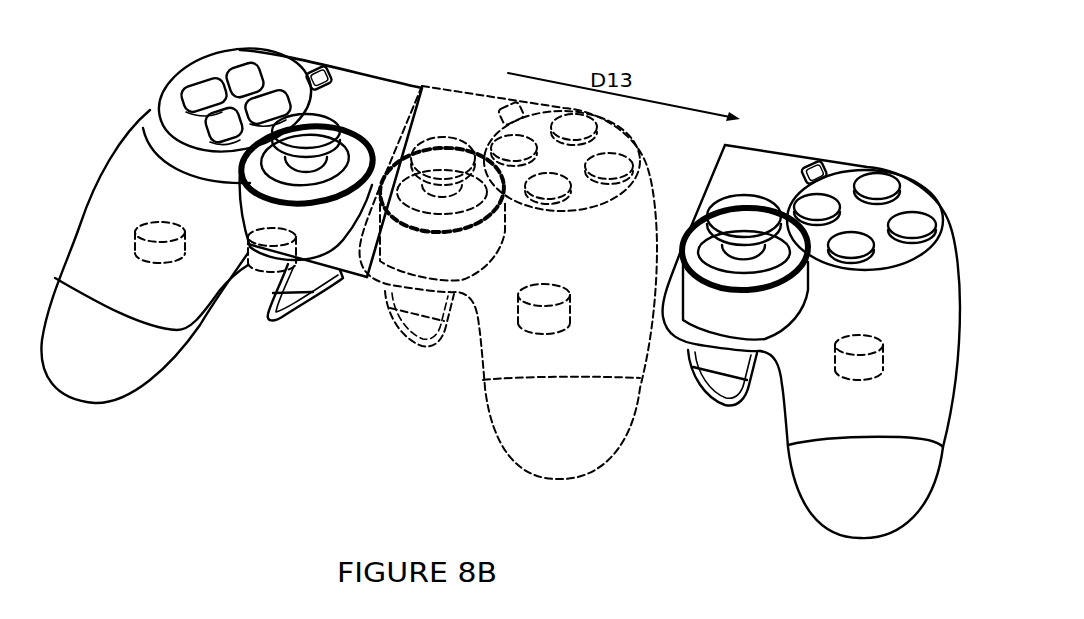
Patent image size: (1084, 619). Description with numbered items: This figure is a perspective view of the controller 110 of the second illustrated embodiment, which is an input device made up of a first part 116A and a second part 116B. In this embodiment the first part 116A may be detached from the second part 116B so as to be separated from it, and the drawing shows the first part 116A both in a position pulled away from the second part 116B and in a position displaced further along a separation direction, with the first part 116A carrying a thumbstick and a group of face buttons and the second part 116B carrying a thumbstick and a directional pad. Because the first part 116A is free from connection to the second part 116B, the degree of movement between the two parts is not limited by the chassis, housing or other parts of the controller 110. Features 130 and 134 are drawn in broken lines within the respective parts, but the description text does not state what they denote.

The controller 110 is at (780, 88).
The first part 116A is at (437, 108).
The second part 116B is at (130, 357).
The magnet / coupling element 130 is at (546, 296).
The magnet / coupling element 134 is at (164, 232).